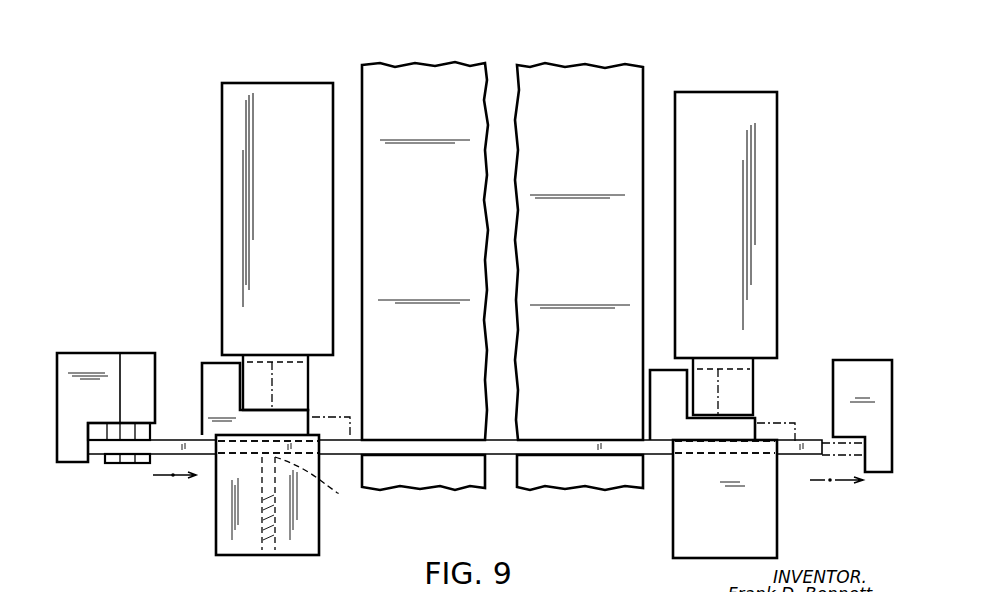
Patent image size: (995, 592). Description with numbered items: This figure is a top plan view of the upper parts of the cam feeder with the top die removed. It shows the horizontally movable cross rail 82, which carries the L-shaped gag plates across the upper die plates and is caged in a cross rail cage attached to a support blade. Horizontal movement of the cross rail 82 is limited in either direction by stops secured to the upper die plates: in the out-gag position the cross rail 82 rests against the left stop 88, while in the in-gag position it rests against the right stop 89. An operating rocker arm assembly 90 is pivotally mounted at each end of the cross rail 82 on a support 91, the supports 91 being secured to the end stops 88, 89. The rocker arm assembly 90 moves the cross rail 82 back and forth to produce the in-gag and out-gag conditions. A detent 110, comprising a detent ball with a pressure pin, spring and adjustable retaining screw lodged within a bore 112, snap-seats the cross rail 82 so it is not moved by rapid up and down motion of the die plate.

The cross rail 82 is at (412, 448).
The stop 88 is at (82, 363).
The right stop 89 is at (847, 363).
The operating rocker arm assembly 90 is at (141, 470).
The support 91 is at (140, 362).
The detent 110 is at (317, 486).
The bore 112 is at (270, 555).